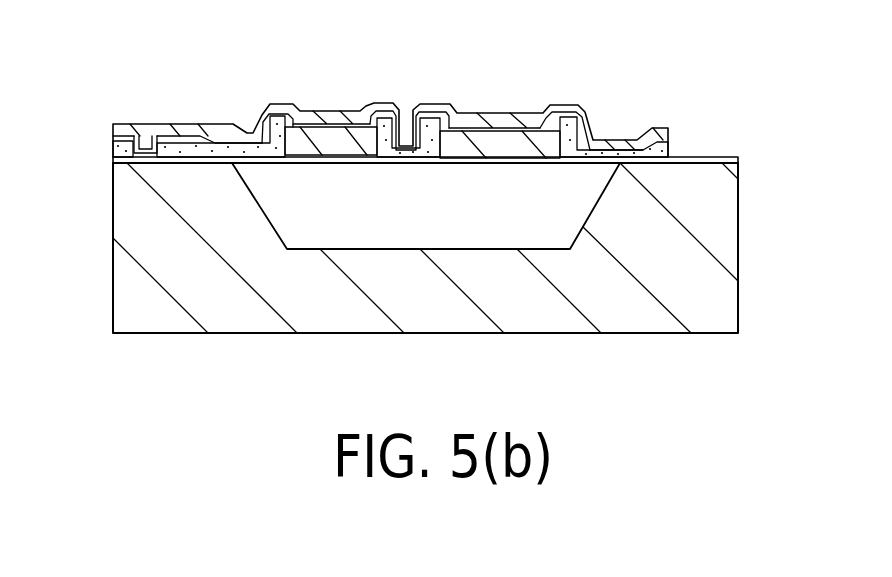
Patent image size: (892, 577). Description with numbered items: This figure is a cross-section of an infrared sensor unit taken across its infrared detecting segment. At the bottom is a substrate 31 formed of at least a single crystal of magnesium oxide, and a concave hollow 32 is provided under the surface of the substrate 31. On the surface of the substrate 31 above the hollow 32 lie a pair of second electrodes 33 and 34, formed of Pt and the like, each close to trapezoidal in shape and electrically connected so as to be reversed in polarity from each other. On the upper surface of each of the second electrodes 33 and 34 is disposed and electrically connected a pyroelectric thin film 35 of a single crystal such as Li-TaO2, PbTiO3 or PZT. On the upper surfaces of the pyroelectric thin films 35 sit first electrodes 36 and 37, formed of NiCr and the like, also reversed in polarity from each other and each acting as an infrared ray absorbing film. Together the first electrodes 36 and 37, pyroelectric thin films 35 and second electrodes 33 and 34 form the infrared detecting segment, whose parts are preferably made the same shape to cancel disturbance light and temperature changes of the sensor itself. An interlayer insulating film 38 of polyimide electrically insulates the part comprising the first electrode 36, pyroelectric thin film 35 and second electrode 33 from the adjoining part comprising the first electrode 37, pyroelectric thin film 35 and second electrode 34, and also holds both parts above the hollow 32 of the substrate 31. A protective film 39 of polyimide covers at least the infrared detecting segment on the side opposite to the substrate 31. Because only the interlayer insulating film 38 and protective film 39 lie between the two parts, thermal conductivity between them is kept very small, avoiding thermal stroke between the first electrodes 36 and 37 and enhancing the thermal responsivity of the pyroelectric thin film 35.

The substrate 31 is at (692, 173).
The concave hollow 32 is at (502, 228).
The second electrode 33 is at (328, 158).
The second electrode 34 is at (467, 163).
The pyroelectric thin film 35 is at (347, 145).
The first electrode 36 is at (318, 133).
The first electrode 37 is at (500, 130).
The interlayer insulating film 38 is at (202, 138).
The protective film 39 is at (148, 125).